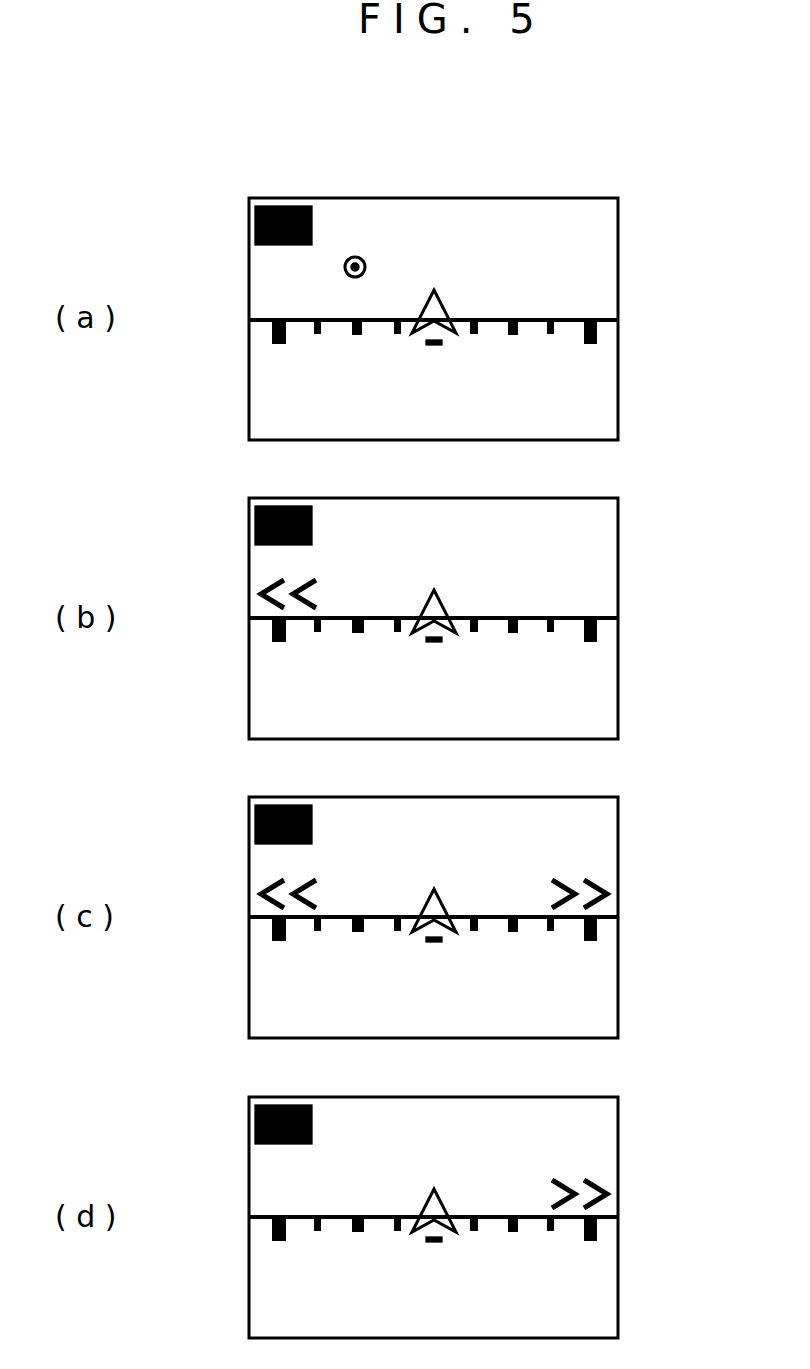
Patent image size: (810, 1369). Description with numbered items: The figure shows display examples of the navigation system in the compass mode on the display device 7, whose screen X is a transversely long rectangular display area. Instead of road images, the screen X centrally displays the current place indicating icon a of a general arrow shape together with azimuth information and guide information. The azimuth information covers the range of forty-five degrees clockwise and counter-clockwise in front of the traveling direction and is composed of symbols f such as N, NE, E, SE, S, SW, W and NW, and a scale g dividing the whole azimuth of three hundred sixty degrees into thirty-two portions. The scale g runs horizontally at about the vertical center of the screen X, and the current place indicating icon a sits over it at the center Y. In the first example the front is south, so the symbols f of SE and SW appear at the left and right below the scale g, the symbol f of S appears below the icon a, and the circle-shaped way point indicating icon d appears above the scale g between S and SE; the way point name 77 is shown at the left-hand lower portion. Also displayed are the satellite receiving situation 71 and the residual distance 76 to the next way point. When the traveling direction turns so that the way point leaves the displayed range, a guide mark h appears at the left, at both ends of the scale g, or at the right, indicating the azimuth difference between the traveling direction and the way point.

The display device 7 is at (298, 185).
The satellite receiving situation 71 is at (268, 245).
The residual distance 76 is at (608, 243).
The way point name 77 is at (250, 418).
The way point indicating icon d is at (355, 256).
The screen X is at (490, 218).
The center Y is at (420, 302).
The current place indicating icon a is at (445, 305).
The symbols f is at (252, 348).
The scale g is at (563, 318).
The guide mark h is at (280, 583).